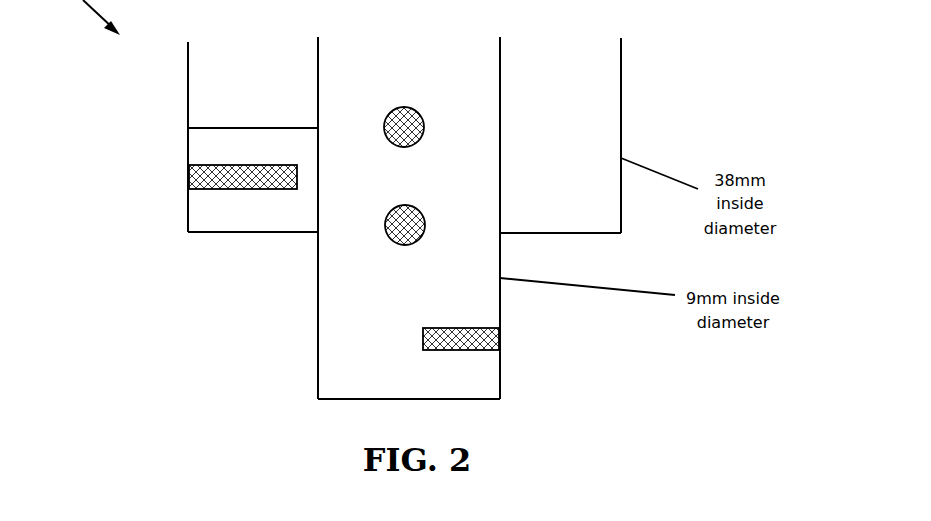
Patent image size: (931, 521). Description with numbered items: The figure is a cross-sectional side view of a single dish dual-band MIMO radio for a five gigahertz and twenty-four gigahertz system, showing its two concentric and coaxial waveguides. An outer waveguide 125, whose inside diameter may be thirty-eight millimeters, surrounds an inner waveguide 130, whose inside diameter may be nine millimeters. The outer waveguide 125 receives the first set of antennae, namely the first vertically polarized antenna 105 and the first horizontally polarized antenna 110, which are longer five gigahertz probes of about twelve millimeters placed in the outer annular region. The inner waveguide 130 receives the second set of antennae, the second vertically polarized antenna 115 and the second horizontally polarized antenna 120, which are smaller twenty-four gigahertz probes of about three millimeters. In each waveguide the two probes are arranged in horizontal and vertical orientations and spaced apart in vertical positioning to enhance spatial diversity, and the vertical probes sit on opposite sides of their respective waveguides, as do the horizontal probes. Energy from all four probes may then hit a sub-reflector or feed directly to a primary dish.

The first vertically polarized antenna 105 is at (385, 226).
The first horizontally polarized antenna 110 is at (240, 188).
The second vertically polarized antenna 115 is at (424, 127).
The second horizontally polarized antenna 120 is at (460, 350).
The outer waveguide 125 is at (188, 82).
The inner waveguide 130 is at (188, 128).